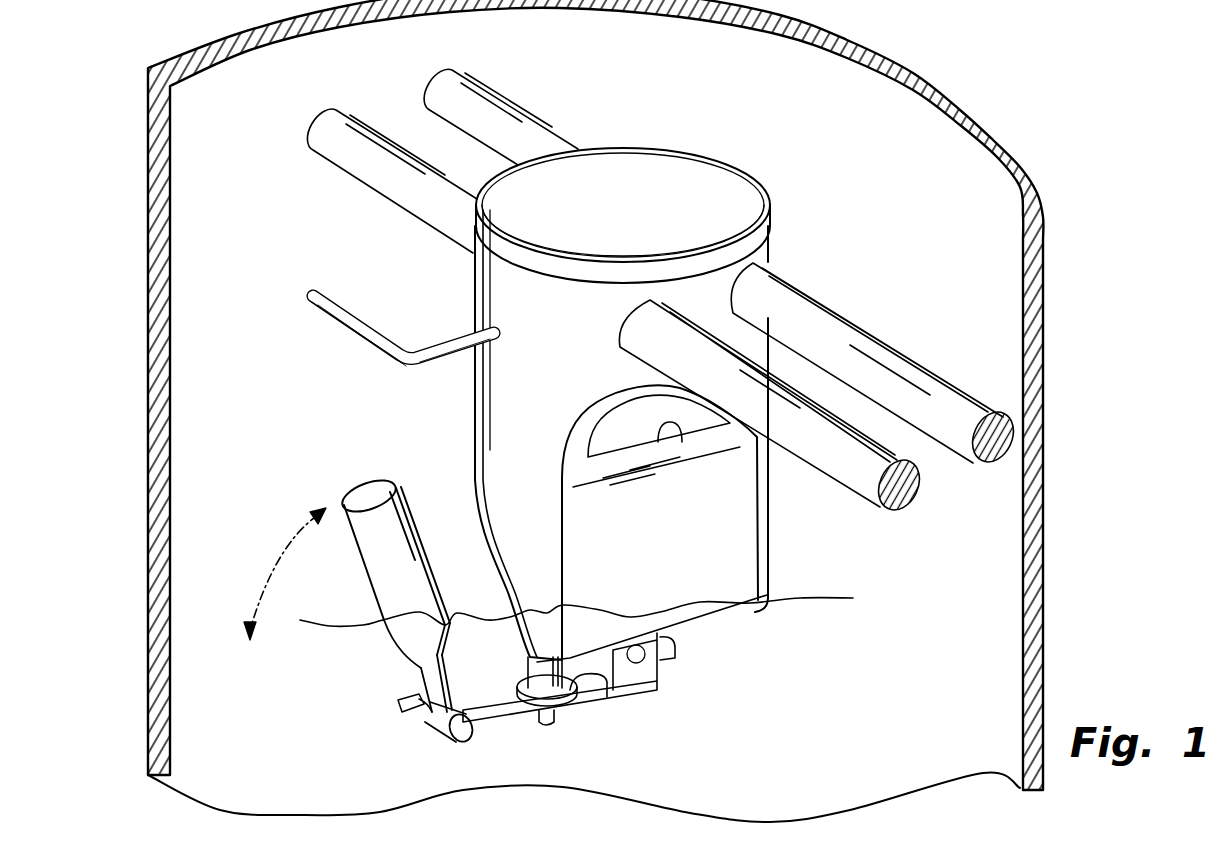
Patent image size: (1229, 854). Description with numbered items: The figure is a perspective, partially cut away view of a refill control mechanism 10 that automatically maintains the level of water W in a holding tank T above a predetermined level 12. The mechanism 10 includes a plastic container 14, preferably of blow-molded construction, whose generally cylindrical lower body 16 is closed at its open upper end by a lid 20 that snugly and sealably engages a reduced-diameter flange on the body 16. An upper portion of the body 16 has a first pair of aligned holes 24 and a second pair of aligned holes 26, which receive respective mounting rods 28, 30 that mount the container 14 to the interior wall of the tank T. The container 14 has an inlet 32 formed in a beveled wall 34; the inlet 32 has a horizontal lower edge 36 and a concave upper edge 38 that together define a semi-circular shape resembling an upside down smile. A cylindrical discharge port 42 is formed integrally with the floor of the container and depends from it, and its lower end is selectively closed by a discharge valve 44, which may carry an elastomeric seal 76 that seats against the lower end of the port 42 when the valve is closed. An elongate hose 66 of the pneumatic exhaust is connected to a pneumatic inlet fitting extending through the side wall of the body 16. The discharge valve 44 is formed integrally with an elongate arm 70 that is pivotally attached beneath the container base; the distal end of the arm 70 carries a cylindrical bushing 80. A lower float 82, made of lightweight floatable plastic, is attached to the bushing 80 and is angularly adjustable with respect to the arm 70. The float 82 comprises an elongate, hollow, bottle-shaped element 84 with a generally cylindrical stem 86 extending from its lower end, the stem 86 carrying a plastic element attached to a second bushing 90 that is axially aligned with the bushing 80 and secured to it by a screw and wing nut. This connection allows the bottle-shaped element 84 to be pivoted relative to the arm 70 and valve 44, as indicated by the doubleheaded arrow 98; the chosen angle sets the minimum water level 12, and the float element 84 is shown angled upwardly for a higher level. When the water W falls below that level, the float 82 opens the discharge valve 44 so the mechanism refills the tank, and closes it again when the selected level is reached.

The refill control mechanism 10 is at (708, 672).
The predetermined level 12 is at (613, 610).
The plastic container 14 is at (473, 385).
The lower body 16 is at (473, 413).
The lid 20 is at (703, 188).
The first pair of aligned holes 24 is at (627, 303).
The second pair of aligned holes 26 is at (733, 284).
The mounting rod 28 is at (818, 470).
The mounting rod 30 is at (863, 320).
The inlet 32 is at (603, 417).
The beveled wall 34 is at (580, 447).
The horizontal lower edge 36 is at (683, 445).
The concave upper edge 38 is at (640, 388).
The discharge port 42 is at (543, 677).
The discharge valve 44 is at (556, 700).
The hose 66 is at (383, 333).
The elongate arm 70 is at (503, 717).
The elastomeric seal 76 is at (610, 692).
The cylindrical bushing 80 is at (440, 732).
The lower float 82 is at (363, 573).
The bottle-shaped element 84 is at (390, 640).
The cylindrical stem 86 is at (427, 680).
The second bushing 90 is at (427, 712).
The doubleheaded arrow 98 is at (260, 550).
The holding tank T is at (948, 103).
The water W is at (807, 602).